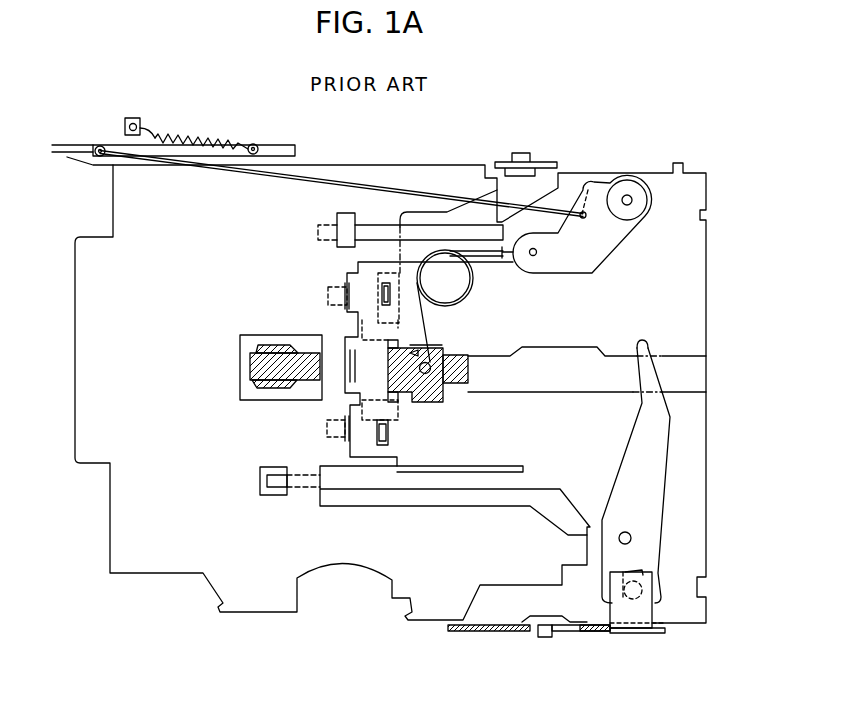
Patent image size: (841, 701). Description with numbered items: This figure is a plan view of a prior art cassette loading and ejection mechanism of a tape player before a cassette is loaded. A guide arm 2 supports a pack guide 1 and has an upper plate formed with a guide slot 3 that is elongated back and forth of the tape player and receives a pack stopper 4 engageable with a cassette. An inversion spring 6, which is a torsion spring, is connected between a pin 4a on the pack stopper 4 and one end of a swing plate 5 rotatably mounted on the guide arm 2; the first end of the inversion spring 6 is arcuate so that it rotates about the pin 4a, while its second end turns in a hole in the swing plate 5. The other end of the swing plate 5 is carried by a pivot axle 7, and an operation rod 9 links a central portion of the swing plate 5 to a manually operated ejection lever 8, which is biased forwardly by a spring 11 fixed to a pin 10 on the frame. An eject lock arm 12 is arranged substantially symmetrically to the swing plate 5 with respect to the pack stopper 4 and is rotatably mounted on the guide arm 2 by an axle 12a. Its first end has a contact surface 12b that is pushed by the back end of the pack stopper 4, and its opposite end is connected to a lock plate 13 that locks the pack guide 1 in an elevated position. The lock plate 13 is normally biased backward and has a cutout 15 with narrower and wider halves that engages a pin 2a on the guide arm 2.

The pack guide 1 is at (178, 555).
The guide arm 2 is at (580, 633).
The pin 2a is at (545, 637).
The guide slot 3 is at (683, 382).
The pack stopper 4 is at (422, 382).
The pin 4a is at (457, 383).
The swing plate 5 is at (620, 230).
The inversion spring 6 is at (430, 242).
The pivot axle 7 is at (627, 196).
The ejection lever 8 is at (279, 146).
The operation rod 9 is at (328, 181).
The pin 10 is at (125, 128).
The spring 11 is at (197, 136).
The eject lock arm 12 is at (656, 492).
The axle 12a is at (632, 538).
The contact surface 12b is at (638, 368).
The lock plate 13 is at (472, 632).
The cutout 15 is at (580, 633).